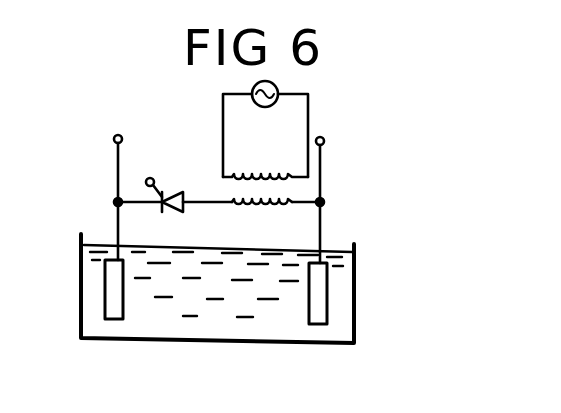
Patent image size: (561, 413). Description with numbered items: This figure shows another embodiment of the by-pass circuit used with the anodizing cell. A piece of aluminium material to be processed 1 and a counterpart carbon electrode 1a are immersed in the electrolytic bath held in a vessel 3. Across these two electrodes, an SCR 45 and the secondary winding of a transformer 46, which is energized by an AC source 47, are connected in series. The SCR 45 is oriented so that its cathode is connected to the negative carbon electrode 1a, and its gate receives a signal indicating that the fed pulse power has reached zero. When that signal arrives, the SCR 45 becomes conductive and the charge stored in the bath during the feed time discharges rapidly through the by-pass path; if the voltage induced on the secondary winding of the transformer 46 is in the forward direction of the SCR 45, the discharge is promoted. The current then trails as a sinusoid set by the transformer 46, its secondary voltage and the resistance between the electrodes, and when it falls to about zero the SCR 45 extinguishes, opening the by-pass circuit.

The aluminium material to be processed 1 is at (112, 292).
The counterpart carbon electrode 1a is at (318, 306).
The vessel 3 is at (224, 345).
The SCR 45 is at (166, 191).
The transformer 46 is at (243, 188).
The AC source 47 is at (279, 90).